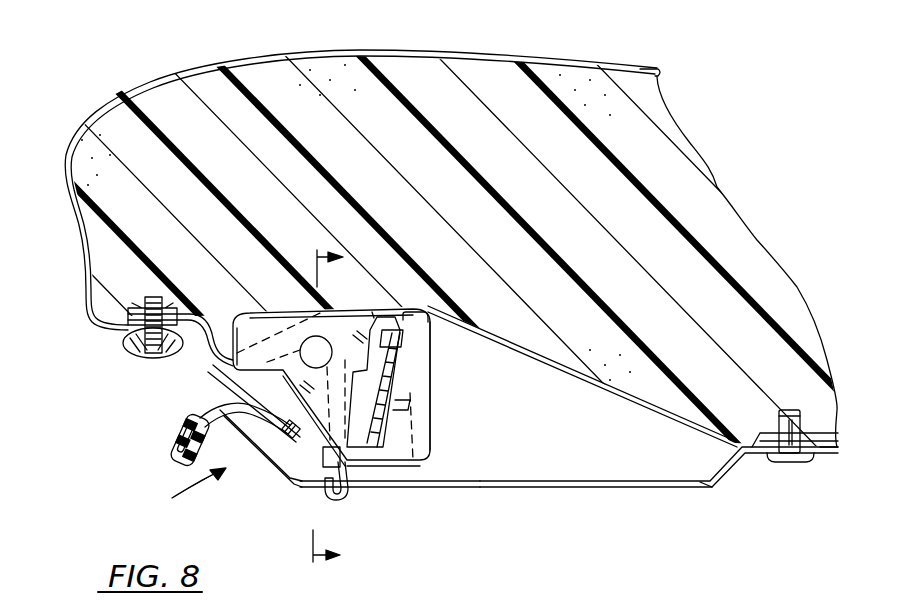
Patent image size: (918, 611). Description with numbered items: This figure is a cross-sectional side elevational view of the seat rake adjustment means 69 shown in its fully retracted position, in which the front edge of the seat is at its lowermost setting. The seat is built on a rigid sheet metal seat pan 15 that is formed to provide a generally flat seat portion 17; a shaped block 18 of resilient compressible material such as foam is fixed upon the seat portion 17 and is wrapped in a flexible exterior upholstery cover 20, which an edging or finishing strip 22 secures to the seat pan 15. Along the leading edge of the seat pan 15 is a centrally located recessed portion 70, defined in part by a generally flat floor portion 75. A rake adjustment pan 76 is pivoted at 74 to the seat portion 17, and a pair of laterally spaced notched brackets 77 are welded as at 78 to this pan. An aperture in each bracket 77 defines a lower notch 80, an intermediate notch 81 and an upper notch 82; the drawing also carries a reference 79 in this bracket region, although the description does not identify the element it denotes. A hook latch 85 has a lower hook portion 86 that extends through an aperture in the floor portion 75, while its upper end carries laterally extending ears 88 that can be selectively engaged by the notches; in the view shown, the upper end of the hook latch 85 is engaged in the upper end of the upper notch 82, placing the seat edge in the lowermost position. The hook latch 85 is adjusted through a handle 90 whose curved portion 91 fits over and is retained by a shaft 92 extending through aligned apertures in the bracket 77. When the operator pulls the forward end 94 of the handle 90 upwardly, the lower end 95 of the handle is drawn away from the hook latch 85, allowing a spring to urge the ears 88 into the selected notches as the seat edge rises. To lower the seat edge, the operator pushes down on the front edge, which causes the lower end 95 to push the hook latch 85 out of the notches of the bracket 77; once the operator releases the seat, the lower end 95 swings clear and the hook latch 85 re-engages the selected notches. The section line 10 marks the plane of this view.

The section line 10 is at (344, 408).
The seat pan 15 is at (712, 488).
The seat portion 17 is at (836, 449).
The block 18 is at (80, 157).
The exterior upholstery cover 20 is at (72, 132).
The edging or finishing strip 22 is at (176, 450).
The seat rake adjustment means 69 is at (184, 489).
The recessed portion 70 is at (587, 489).
The pivot 74 is at (788, 408).
The floor portion 75 is at (490, 489).
The rake adjustment pan 76 is at (562, 360).
The notched bracket 77 is at (432, 434).
The weld 78 is at (240, 316).
The spring seat 79 is at (411, 406).
The lower notch 80 is at (330, 448).
The intermediate notch 81 is at (376, 316).
The upper notch 82 is at (407, 318).
The hook latch 85 is at (413, 380).
The lower hook portion 86 is at (345, 498).
The ears 88 is at (404, 340).
The handle 90 is at (213, 368).
The curved portion 91 is at (300, 320).
The shaft 92 is at (322, 338).
The forward end 94 is at (125, 348).
The lower end 95 is at (312, 468).